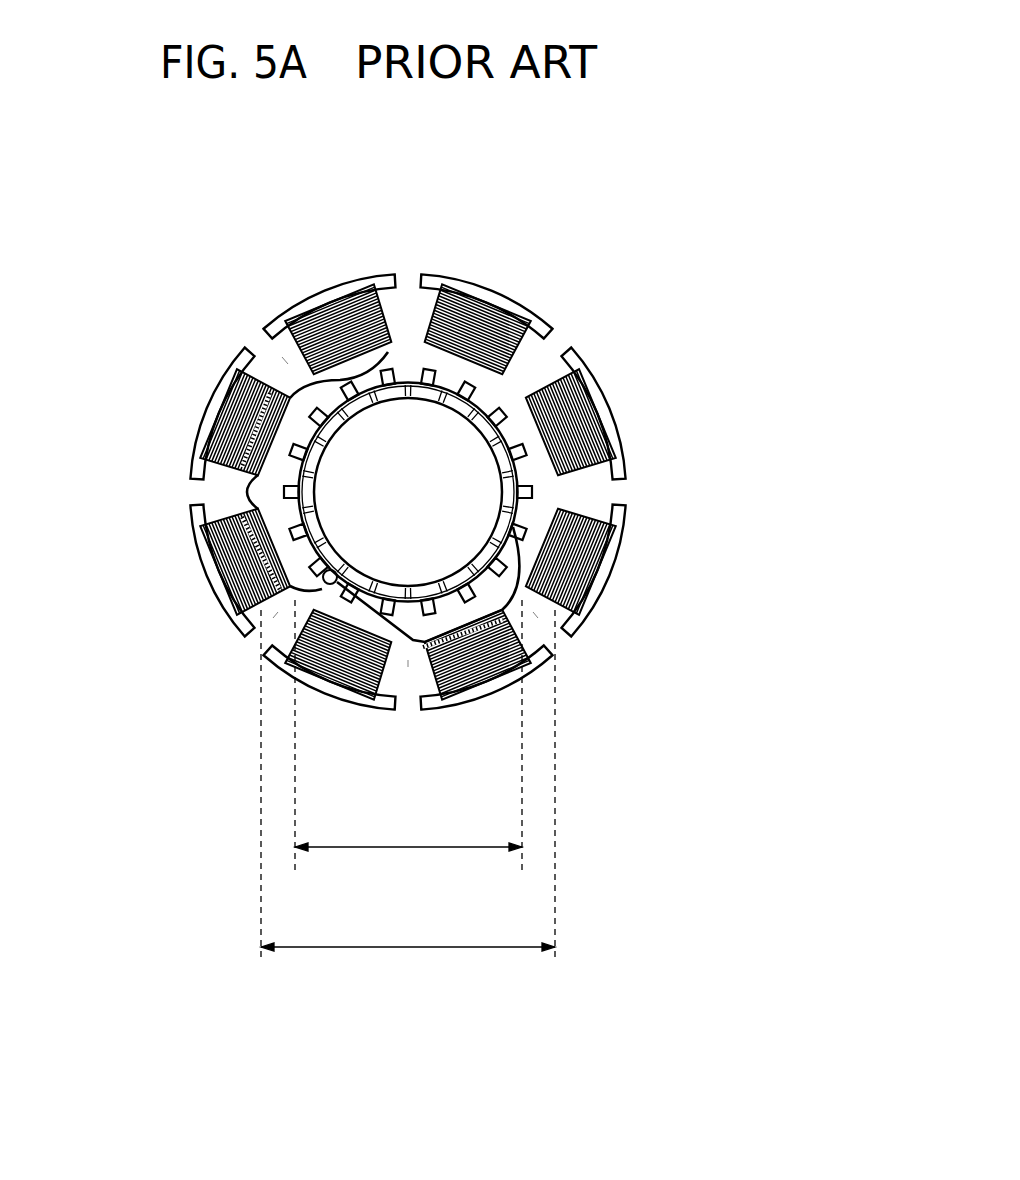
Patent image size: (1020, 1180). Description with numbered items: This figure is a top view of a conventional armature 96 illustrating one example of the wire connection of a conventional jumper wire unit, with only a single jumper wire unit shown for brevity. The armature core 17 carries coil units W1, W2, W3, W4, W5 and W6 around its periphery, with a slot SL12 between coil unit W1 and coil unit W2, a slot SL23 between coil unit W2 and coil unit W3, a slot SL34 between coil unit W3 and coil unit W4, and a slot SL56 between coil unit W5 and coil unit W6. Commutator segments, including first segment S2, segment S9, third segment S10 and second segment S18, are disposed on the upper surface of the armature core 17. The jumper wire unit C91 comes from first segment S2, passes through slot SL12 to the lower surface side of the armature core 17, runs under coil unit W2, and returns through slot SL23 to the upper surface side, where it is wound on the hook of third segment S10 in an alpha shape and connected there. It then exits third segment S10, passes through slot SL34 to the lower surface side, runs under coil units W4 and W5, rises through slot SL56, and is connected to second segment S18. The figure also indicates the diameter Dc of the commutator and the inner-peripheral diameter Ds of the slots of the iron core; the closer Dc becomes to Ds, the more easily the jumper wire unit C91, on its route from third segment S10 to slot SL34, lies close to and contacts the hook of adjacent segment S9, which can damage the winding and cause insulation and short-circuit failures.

The armature 96 is at (557, 311).
The armature core 17 is at (608, 400).
The coil unit W1 is at (588, 582).
The coil unit W2 is at (517, 662).
The coil unit W3 is at (320, 657).
The coil unit W4 is at (240, 578).
The coil unit W5 is at (237, 408).
The coil unit W6 is at (345, 322).
The slot SL12 is at (538, 618).
The slot SL23 is at (408, 667).
The slot SL34 is at (273, 618).
The slot SL56 is at (282, 357).
The first segment S2 is at (500, 515).
The segment S9 is at (355, 573).
The third segment S10 is at (337, 558).
The second segment S18 is at (356, 397).
The jumper wire unit C91 is at (550, 540).
The diameter of the commutator Dc is at (408, 747).
The inner-peripheral diameter of the slots Ds is at (408, 801).